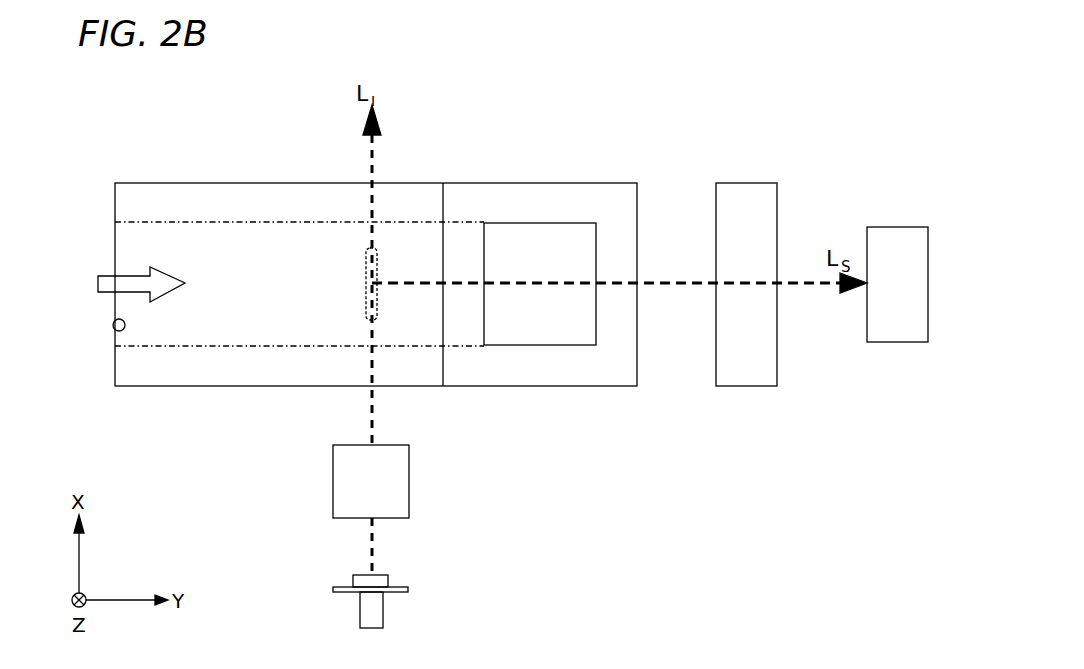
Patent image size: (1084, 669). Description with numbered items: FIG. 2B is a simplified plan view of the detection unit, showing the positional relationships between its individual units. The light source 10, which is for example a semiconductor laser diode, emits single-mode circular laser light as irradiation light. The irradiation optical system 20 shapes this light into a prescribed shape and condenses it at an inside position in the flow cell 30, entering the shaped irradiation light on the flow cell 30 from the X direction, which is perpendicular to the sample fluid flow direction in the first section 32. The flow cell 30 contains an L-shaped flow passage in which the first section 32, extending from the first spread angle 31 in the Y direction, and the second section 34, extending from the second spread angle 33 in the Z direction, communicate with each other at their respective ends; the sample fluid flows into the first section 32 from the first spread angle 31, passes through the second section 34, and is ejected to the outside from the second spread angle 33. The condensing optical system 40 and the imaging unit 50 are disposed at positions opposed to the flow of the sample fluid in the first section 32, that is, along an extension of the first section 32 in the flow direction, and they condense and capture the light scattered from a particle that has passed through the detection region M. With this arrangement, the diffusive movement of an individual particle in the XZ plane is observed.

The light source 10 is at (383, 610).
The irradiation optical system 20 is at (409, 480).
The flow cell 30 is at (603, 386).
The first spread angle 31 is at (114, 329).
The first section 32 is at (211, 249).
The second spread angle 33 is at (511, 229).
The second section 34 is at (548, 242).
The condensing optical system 40 is at (752, 386).
The imaging unit 50 is at (906, 342).
The detection region M is at (366, 280).